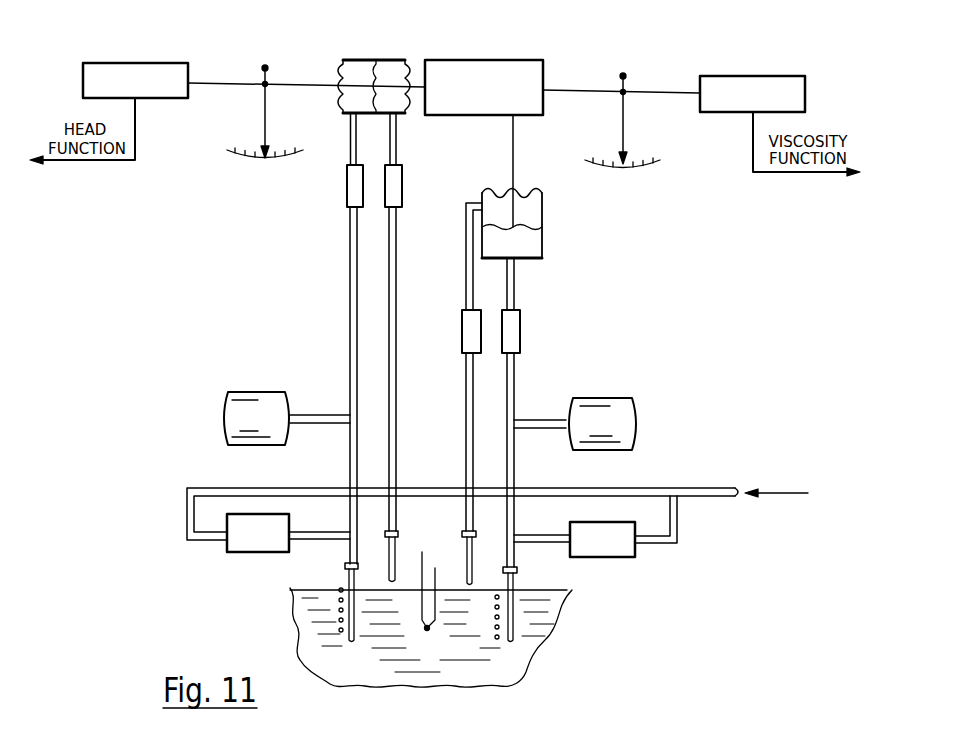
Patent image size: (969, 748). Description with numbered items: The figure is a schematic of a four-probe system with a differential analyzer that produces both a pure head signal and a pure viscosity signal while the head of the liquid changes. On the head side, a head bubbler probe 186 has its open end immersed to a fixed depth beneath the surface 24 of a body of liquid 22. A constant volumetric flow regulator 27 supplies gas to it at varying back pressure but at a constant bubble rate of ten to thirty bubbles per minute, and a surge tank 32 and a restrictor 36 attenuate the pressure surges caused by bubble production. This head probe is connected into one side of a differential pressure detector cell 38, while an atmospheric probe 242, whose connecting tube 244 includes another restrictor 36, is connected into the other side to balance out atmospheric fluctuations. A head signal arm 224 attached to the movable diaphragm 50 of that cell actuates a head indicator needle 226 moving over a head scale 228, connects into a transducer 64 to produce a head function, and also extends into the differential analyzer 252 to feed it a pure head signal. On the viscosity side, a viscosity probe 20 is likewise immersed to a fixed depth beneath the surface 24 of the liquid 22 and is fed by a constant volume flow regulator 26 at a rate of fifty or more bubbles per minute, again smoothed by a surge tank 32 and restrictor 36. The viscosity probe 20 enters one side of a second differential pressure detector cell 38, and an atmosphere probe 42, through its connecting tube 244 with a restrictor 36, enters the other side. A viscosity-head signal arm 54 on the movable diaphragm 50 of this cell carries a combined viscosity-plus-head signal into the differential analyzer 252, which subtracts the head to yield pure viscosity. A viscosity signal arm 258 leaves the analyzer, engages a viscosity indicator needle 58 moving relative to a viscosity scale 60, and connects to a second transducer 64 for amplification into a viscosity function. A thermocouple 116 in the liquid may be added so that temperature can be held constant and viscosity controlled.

The viscosity probe 20 is at (512, 627).
The body of liquid 22 is at (370, 677).
The surface 24 is at (550, 590).
The constant volume flow regulator 26 is at (590, 552).
The constant volumetric flow regulator 27 is at (246, 546).
The surge tank 32 is at (430, 421).
The restrictor 36 is at (347, 200).
The differential pressure detector cell 38 is at (376, 50).
The atmosphere probe 42 is at (466, 548).
The movable diaphragm 50 is at (372, 84).
The viscosity-head signal arm 54 is at (513, 135).
The viscosity indicator needle 58 is at (623, 115).
The viscosity scale 60 is at (600, 158).
The transducer 64 is at (135, 62).
The thermocouple 116 is at (427, 628).
The head bubbler probe 186 is at (347, 600).
The head signal arm 224 is at (215, 84).
The head indicator needle 226 is at (265, 108).
The head scale 228 is at (235, 150).
The atmospheric probe 242 is at (394, 556).
The connecting tube 244 is at (466, 373).
The differential analyzer 252 is at (463, 60).
The viscosity signal arm 258 is at (606, 91).